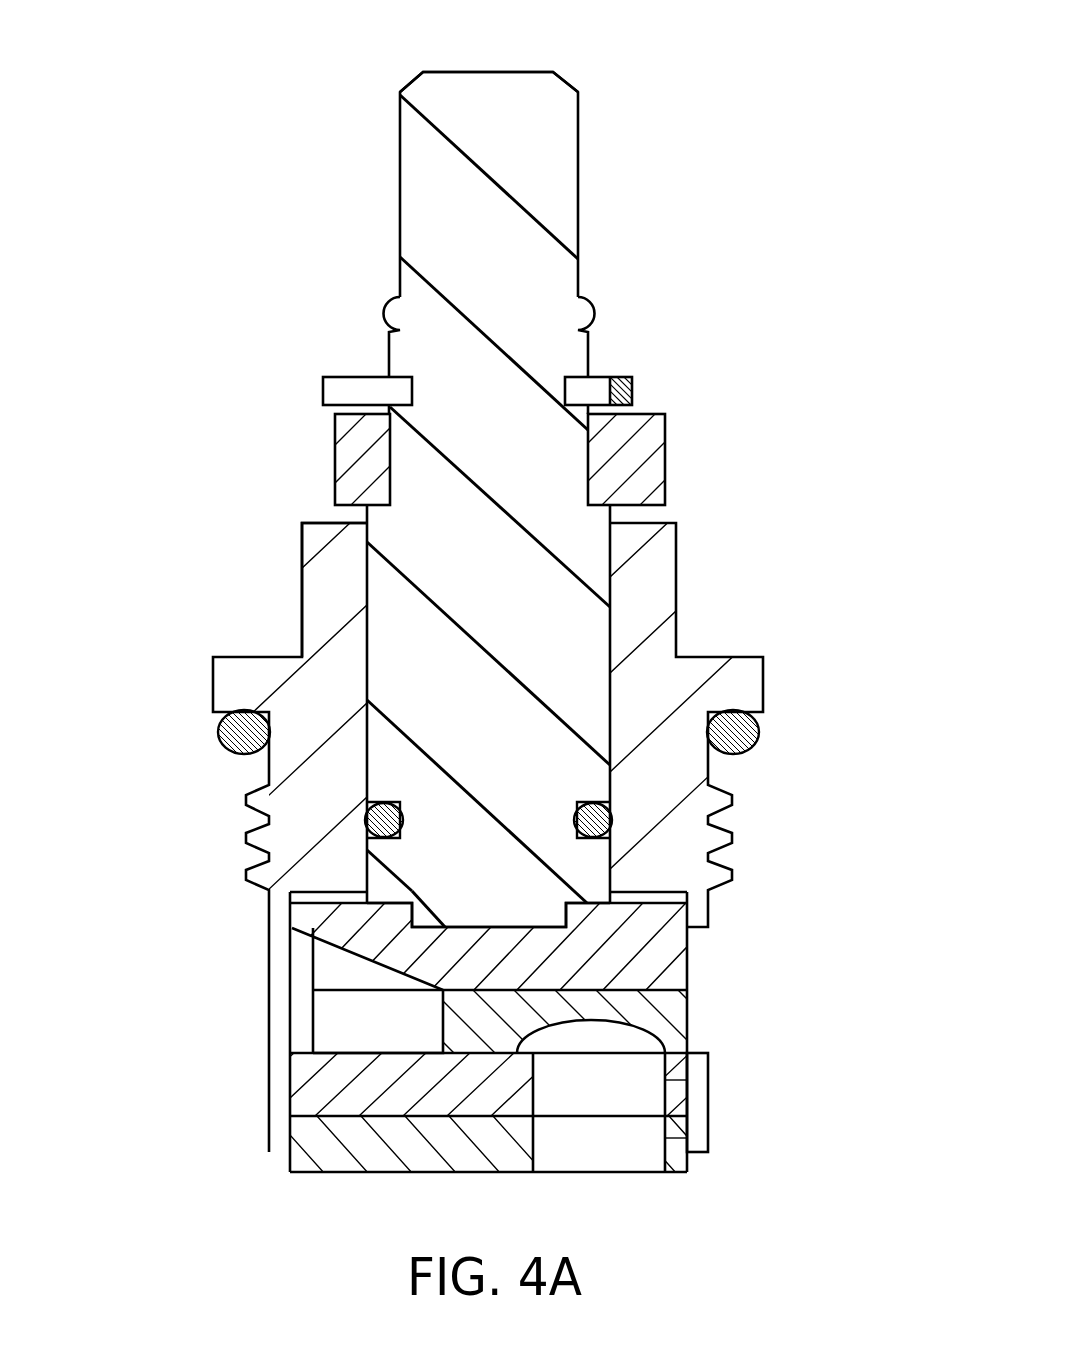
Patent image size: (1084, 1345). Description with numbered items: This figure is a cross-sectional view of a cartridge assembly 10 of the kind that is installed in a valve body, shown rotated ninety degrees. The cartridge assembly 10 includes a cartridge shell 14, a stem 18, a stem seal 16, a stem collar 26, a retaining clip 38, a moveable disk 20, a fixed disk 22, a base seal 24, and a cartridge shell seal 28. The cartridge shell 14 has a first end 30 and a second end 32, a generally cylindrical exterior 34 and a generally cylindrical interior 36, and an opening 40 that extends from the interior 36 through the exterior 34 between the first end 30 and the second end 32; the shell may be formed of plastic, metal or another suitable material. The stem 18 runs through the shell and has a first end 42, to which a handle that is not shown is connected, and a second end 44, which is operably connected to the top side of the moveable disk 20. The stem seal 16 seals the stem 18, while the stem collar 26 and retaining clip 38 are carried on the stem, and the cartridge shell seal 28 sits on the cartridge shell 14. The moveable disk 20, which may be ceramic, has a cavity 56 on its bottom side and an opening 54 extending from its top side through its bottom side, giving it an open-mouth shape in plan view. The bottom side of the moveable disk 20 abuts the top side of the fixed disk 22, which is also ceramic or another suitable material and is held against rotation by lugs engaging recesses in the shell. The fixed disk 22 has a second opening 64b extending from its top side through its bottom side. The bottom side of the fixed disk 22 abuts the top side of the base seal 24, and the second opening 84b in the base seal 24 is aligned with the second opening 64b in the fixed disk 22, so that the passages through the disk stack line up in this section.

The cartridge assembly 10 is at (210, 190).
The first end of the stem 42 is at (553, 72).
The stem 18 is at (578, 233).
The retaining clip 38 is at (323, 377).
The stem collar 26 is at (332, 443).
The second end of the cartridge shell 32 is at (300, 522).
The cartridge shell 14 is at (676, 558).
The cartridge shell seal 28 is at (217, 733).
The stem seal 16 is at (613, 813).
The interior of the cartridge shell 36 is at (657, 895).
The opening of the cartridge shell 40 is at (688, 950).
The second end of the stem 44 is at (313, 990).
The opening of the moveable disk 54 is at (340, 1010).
The moveable disk 20 is at (687, 1002).
The cavity of the moveable disk 56 is at (645, 1042).
The fixed disk 22 is at (648, 1108).
The base seal 24 is at (290, 1117).
The second opening of the fixed disk 64b is at (665, 1105).
The exterior of the cartridge shell 34 is at (714, 1127).
The first end of the cartridge shell 30 is at (290, 1137).
The second opening of the base seal 84b is at (652, 1138).